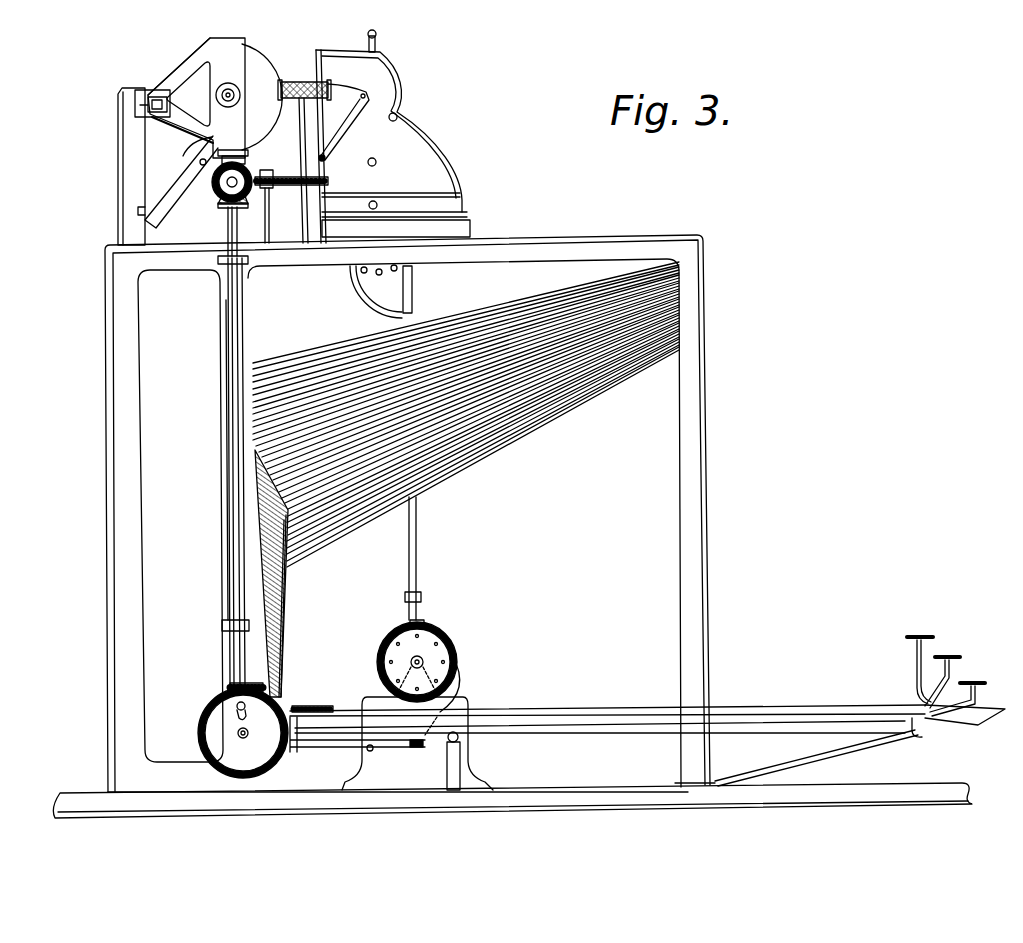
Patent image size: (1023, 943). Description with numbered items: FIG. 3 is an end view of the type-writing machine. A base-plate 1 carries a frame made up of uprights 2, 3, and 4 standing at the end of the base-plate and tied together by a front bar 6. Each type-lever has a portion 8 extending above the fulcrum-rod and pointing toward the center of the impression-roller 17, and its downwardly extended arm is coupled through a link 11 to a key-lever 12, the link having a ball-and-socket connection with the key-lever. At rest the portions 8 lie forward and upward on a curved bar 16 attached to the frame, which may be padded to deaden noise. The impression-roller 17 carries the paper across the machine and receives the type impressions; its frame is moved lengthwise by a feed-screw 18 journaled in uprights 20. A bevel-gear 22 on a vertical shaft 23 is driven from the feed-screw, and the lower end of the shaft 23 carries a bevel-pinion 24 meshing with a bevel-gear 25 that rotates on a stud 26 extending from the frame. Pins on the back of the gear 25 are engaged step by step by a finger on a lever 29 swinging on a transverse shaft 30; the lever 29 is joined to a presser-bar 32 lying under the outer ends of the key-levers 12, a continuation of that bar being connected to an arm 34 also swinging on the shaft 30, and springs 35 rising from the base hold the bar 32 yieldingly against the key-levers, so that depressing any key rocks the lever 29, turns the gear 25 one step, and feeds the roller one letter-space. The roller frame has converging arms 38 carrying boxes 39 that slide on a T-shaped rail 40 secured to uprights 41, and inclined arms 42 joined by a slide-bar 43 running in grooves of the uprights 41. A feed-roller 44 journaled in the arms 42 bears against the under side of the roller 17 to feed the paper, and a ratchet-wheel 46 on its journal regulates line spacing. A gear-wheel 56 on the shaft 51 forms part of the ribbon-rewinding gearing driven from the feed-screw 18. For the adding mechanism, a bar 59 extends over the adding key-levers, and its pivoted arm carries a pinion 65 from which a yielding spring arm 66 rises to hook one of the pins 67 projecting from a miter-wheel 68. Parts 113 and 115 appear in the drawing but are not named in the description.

The base-plate 1 is at (867, 787).
The upright 2 is at (712, 526).
The upright 3 is at (222, 446).
The upright 4 is at (138, 461).
The front bar 6 is at (613, 237).
The type-lever portion 8 is at (507, 441).
The link 11 is at (283, 623).
The key-lever 12 is at (786, 712).
The curved bar 16 is at (225, 53).
The impression-roller 17 is at (266, 72).
The feed-screw 18 is at (437, 159).
The upright 20 is at (223, 217).
The bevel-gear 22 is at (215, 199).
The vertical shaft 23 is at (227, 393).
The bevel-pinion 24 is at (228, 688).
The bevel-gear 25 is at (222, 466).
The stud 26 is at (238, 737).
The lever 29 is at (601, 738).
The shaft 30 is at (450, 741).
The presser-bar 32 is at (927, 726).
The arm 34 is at (176, 67).
The spring 35 is at (788, 763).
The converging arm 38 is at (190, 135).
The box 39 is at (174, 116).
The T-shaped rail 40 is at (150, 105).
The upright 41 is at (127, 195).
The inclined arm 42 is at (176, 184).
The slide-bar 43 is at (141, 211).
The feed-roller 44 is at (207, 143).
The ratchet-wheel 46 is at (247, 154).
The shaft 51 is at (301, 230).
The gear-wheel 56 is at (329, 179).
The bar 59 is at (330, 694).
The pinion 65 is at (272, 189).
The spring yielding arm 66 is at (458, 682).
The pin 67 is at (381, 652).
The miter-wheel 68 is at (448, 641).
The arm 113 is at (348, 136).
The pivot 115 is at (356, 119).